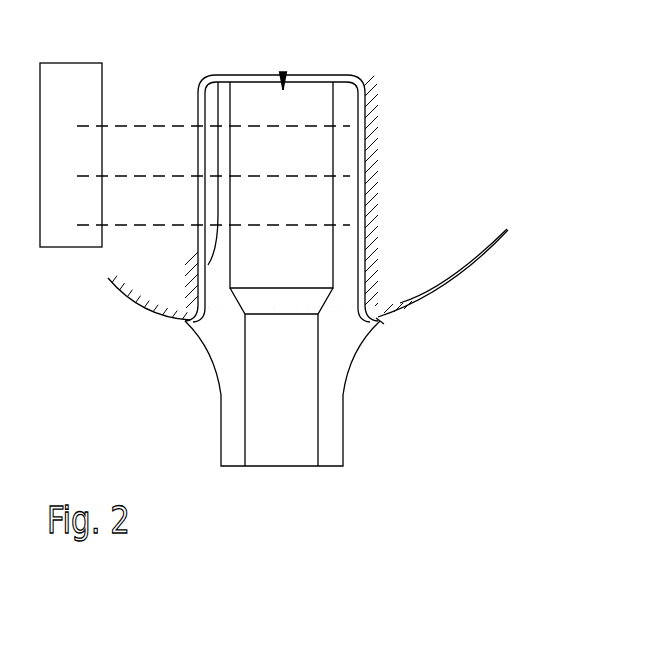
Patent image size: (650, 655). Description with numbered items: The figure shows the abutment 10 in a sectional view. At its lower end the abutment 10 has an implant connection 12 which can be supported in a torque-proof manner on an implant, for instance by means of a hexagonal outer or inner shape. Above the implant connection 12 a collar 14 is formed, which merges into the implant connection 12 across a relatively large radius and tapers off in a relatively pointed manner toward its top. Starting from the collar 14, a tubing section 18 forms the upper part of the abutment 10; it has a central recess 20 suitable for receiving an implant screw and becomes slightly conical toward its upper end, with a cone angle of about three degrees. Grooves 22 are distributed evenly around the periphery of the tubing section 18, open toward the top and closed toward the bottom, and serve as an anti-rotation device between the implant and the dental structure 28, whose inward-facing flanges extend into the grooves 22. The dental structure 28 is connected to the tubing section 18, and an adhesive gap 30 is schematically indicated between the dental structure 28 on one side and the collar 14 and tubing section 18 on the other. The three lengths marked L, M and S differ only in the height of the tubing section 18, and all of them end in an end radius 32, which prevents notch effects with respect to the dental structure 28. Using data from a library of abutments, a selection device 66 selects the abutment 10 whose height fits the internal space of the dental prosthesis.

The abutment 10 is at (332, 428).
The implant connection 12 is at (232, 428).
The collar 14 is at (382, 323).
The tubing section 18 is at (302, 197).
The central recess 20 is at (283, 72).
The grooves 22 is at (217, 207).
The dental structure 28 is at (455, 240).
The adhesive gap 30 is at (186, 322).
The end radius 32 is at (345, 97).
The selection device 66 is at (56, 248).